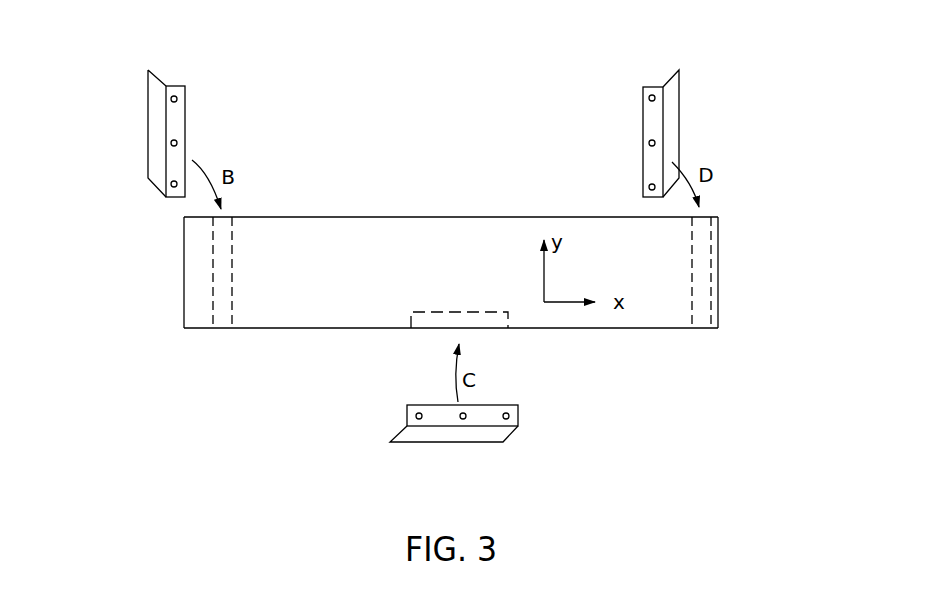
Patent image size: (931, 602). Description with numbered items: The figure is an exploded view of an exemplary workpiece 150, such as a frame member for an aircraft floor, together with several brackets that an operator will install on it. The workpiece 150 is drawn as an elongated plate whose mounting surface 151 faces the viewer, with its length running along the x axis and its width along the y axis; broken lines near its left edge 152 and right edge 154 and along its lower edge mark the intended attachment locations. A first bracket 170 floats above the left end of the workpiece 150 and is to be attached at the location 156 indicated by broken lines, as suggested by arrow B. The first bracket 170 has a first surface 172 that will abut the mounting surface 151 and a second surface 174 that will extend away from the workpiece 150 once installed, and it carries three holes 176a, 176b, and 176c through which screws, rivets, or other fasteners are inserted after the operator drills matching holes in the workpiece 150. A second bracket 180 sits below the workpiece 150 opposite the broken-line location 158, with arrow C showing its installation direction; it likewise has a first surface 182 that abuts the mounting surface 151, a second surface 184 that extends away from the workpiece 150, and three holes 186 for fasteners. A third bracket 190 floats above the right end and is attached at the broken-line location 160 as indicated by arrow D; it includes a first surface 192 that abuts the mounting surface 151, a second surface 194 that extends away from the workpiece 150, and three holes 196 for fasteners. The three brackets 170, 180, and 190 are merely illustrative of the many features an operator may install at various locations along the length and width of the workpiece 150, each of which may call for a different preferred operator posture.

The workpiece 150 is at (450, 270).
The mounting surface 151 is at (321, 269).
The first side edge of plate 152 is at (197, 297).
The second side edge of plate 154 is at (718, 267).
The location 156 is at (221, 325).
The location 158 is at (505, 320).
The location 160 is at (703, 317).
The first bracket 170 is at (167, 148).
The first surface 172 is at (186, 123).
The second surface 174 is at (156, 132).
The hole 176a is at (171, 99).
The hole 176b is at (171, 143).
The hole 176c is at (173, 197).
The second bracket 180 is at (465, 439).
The first surface 182 is at (493, 412).
The second surface 184 is at (432, 435).
The holes 186 is at (416, 416).
The third bracket 190 is at (668, 123).
The first surface 192 is at (650, 132).
The second surface 194 is at (672, 143).
The holes 196 is at (649, 98).